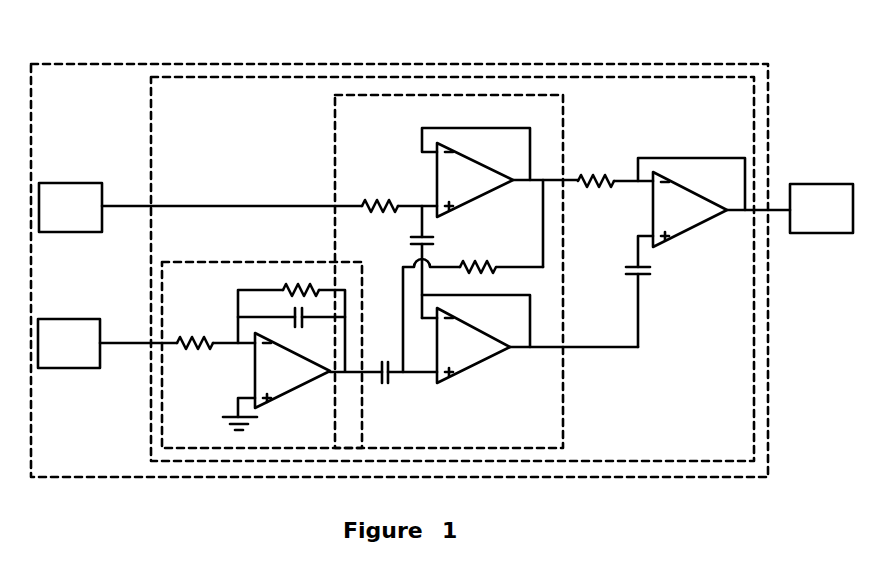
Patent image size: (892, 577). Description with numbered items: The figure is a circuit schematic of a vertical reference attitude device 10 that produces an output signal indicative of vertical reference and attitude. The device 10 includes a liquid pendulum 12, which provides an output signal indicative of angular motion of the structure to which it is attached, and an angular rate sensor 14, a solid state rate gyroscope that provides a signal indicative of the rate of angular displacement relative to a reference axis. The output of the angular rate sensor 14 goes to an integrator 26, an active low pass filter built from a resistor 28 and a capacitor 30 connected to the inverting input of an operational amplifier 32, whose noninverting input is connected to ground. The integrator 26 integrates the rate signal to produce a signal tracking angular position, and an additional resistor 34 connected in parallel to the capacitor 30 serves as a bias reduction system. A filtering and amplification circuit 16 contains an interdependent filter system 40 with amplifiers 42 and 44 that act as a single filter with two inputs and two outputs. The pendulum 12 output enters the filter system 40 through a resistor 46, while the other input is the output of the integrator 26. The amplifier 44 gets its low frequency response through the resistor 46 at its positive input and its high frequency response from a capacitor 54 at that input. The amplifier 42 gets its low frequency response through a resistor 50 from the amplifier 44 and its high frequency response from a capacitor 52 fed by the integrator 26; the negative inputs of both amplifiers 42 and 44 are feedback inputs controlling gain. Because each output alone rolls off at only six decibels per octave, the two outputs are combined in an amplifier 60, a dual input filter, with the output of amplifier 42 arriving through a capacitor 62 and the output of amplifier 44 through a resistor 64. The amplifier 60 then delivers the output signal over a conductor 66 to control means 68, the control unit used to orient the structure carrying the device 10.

The vertical reference attitude device 10 is at (397, 62).
The liquid pendulum 12 is at (84, 180).
The angular rate sensor 14 is at (78, 316).
The filtering and amplification circuit 16 is at (148, 128).
The integrator 26 is at (217, 258).
The resistor 28 is at (192, 353).
The capacitor 30 is at (298, 330).
The operational amplifier 32 is at (298, 392).
The resistor 34 is at (295, 282).
The interdependent filter system 40 is at (333, 152).
The amplifier 42 is at (477, 372).
The amplifier 44 is at (480, 203).
The resistor 46 is at (368, 198).
The resistor 50 is at (480, 276).
The capacitor 52 is at (392, 387).
The capacitor 54 is at (440, 243).
The amplifier 60 is at (688, 235).
The capacitor 62 is at (652, 272).
The resistor 64 is at (588, 168).
The conductor 66 is at (775, 215).
The control means 68 is at (828, 180).